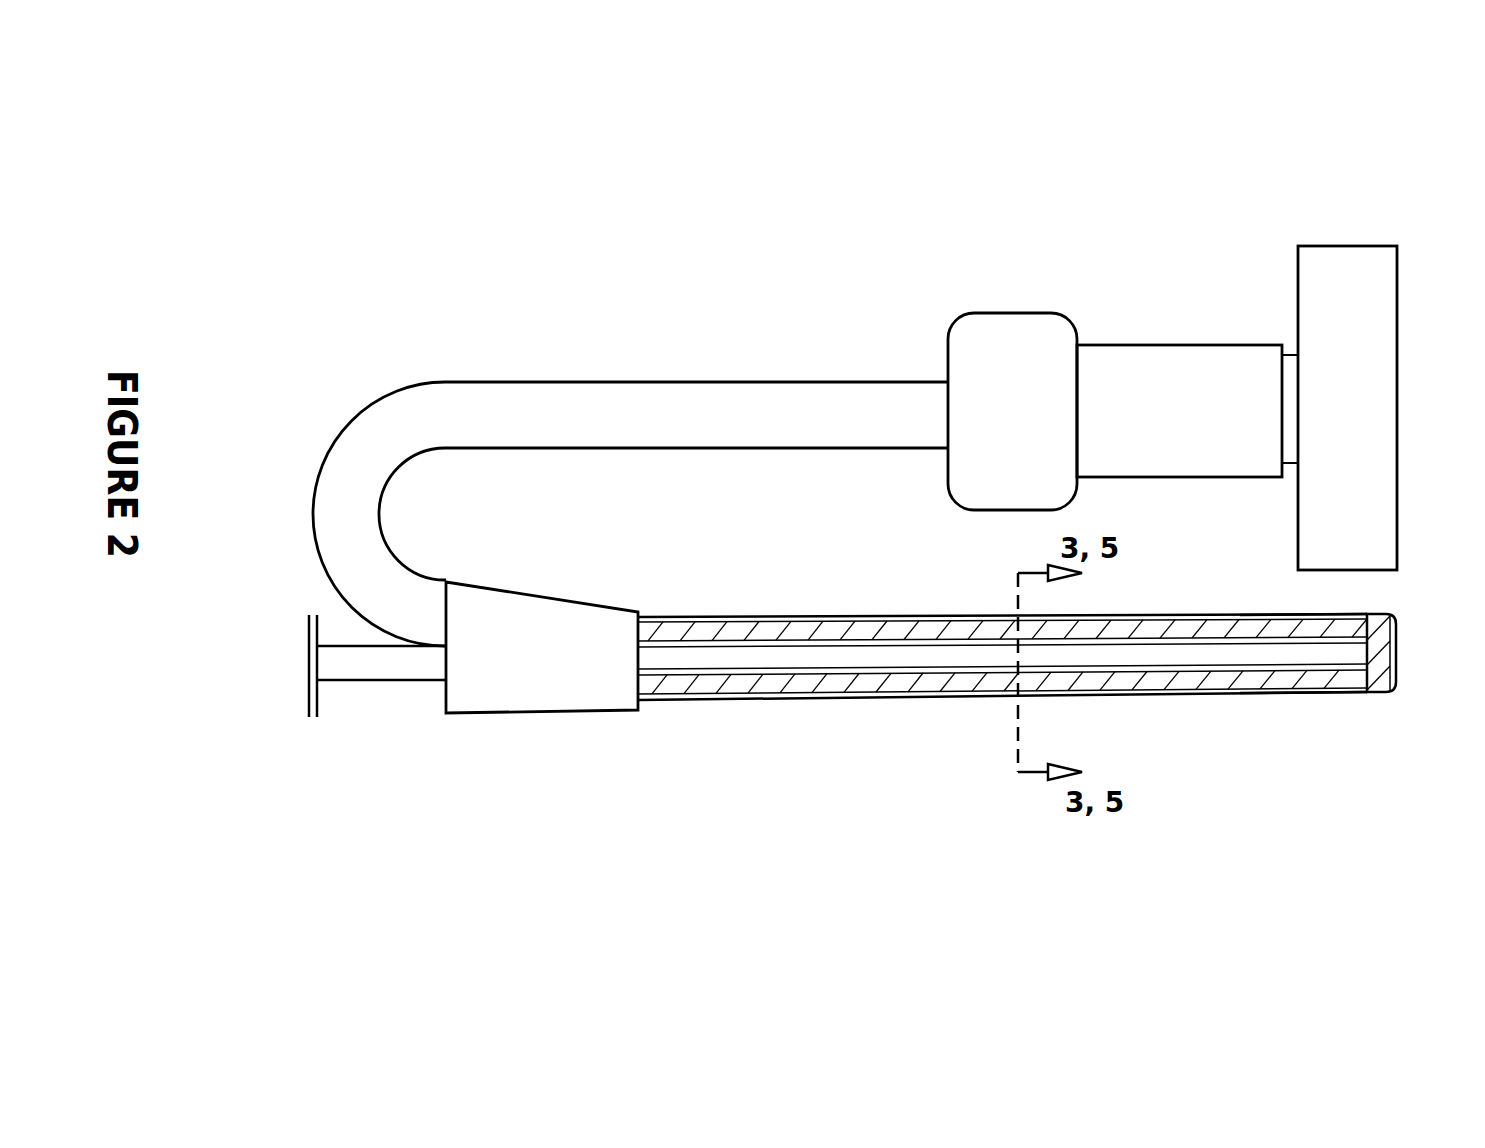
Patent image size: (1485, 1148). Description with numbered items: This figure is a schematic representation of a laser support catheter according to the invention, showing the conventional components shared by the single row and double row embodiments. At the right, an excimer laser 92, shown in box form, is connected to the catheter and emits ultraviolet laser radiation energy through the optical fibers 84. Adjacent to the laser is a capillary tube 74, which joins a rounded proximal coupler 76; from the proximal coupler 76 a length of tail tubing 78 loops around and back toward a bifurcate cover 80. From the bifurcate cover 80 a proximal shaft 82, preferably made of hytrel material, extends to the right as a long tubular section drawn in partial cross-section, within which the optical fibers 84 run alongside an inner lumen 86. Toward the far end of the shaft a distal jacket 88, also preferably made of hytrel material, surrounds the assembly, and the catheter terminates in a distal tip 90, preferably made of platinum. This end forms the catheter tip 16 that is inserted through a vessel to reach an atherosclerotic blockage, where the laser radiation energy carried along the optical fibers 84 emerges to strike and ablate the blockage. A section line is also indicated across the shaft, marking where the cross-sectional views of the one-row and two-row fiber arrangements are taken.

The tip 16 is at (1357, 589).
The capillary tube 74 is at (1187, 369).
The proximal coupler 76 is at (1086, 363).
The tail tubing 78 is at (630, 435).
The bifurcate cover 80 is at (523, 607).
The proximal shaft 82 is at (1002, 625).
The optical fibers 84 is at (1002, 773).
The inner lumen 86 is at (1002, 570).
The distal jacket 88 is at (1278, 769).
The distal tip 90 is at (1383, 697).
The excimer laser 92 is at (1371, 363).